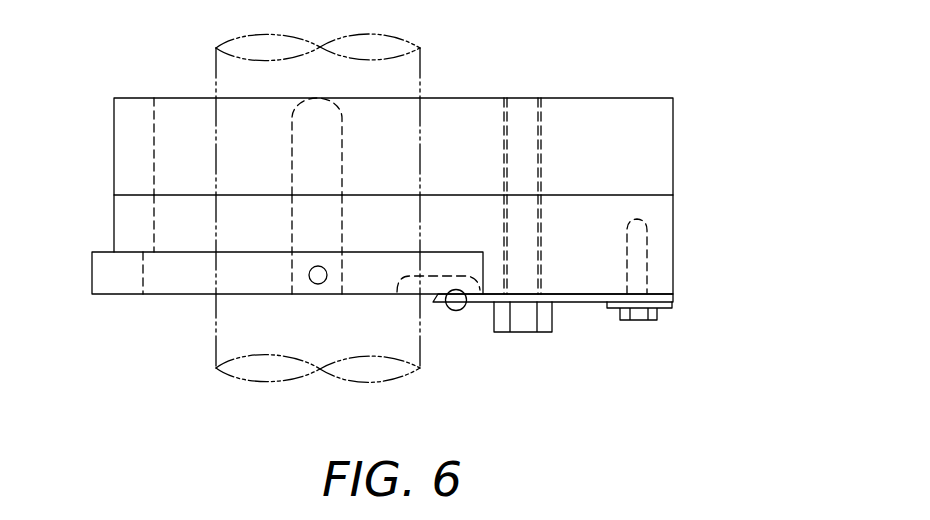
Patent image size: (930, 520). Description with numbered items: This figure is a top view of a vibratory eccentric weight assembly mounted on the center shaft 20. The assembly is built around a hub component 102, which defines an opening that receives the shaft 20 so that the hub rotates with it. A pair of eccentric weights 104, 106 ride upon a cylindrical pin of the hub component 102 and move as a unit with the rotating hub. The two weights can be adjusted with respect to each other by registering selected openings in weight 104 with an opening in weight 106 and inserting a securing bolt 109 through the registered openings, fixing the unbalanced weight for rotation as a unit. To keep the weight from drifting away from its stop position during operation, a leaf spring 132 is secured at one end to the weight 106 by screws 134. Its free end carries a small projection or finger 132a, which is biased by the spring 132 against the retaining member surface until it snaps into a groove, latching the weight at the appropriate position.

The center shaft 20 is at (420, 70).
The hub component 102 is at (92, 282).
The eccentric weight 104 is at (673, 148).
The eccentric weight 106 is at (673, 237).
The securing bolt 109 is at (546, 333).
The leaf spring 132 is at (582, 302).
The finger 132a is at (460, 311).
The screws 134 is at (657, 312).